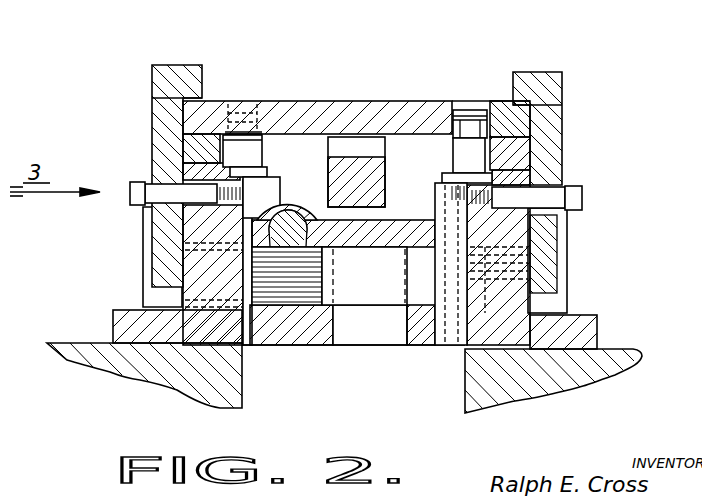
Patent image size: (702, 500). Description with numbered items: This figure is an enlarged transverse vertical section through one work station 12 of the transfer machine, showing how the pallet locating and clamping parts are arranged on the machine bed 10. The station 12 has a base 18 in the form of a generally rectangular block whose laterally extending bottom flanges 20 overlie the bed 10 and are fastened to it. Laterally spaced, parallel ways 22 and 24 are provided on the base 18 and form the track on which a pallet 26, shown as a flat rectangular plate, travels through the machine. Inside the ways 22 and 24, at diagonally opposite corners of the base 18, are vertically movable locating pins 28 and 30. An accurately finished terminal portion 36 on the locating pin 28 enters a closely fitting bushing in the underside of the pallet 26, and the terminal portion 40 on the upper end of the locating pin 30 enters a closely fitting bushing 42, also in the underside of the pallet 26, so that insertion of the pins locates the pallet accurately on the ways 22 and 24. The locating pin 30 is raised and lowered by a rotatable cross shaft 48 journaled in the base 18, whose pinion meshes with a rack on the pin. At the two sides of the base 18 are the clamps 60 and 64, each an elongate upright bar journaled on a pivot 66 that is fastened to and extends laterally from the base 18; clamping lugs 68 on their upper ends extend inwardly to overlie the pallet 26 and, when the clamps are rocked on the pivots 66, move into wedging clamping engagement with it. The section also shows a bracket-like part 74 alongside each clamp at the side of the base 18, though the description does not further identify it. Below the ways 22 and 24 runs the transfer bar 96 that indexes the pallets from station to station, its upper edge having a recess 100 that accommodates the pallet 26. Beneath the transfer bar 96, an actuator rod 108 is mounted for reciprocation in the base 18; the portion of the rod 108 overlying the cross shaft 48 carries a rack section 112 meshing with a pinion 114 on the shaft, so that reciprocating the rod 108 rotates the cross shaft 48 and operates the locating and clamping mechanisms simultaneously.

The bed 10 is at (617, 370).
The station 12 is at (300, 40).
The base 18 is at (518, 235).
The bottom flanges 20 is at (118, 323).
The way 22 is at (203, 143).
The way 24 is at (513, 152).
The pallet 26 is at (311, 101).
The locating pin 28 is at (247, 150).
The locating pin 30 is at (460, 155).
The terminal portion 36 is at (273, 123).
The terminal portion 40 is at (422, 118).
The bushing 42 is at (478, 116).
The cross shaft 48 is at (392, 271).
The clamp 60 is at (157, 90).
The clamp 64 is at (553, 100).
The pivot 66 is at (147, 197).
The clamping lug 68 is at (198, 72).
The bracket 74 is at (147, 247).
The transfer bar 96 is at (372, 192).
The recess 100 is at (328, 152).
The actuator rod 108 is at (287, 212).
The rack section 112 is at (278, 248).
The pinion 114 is at (320, 262).